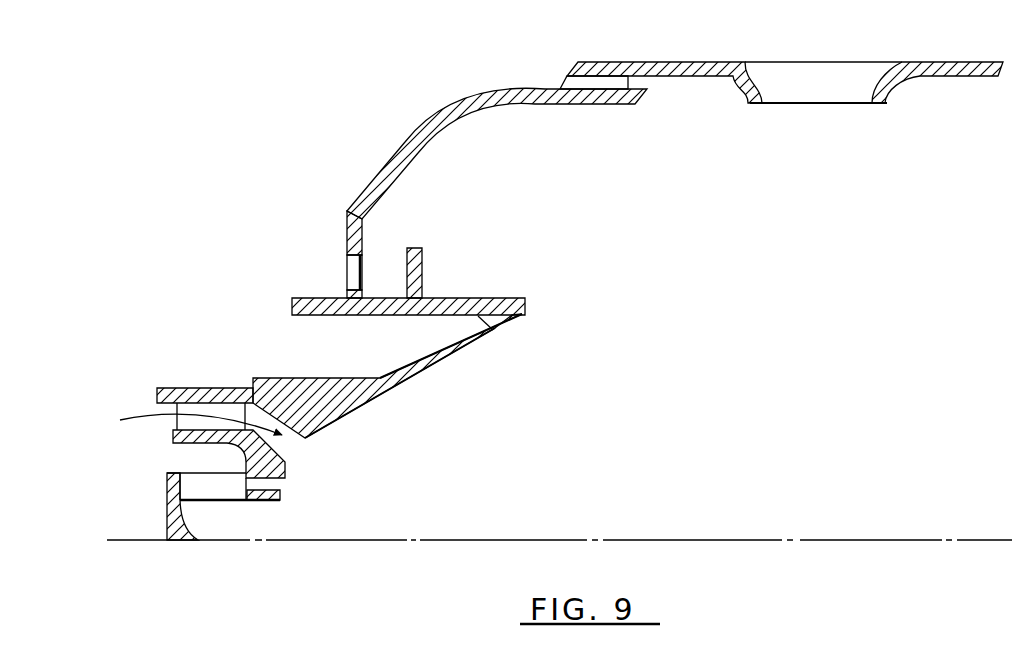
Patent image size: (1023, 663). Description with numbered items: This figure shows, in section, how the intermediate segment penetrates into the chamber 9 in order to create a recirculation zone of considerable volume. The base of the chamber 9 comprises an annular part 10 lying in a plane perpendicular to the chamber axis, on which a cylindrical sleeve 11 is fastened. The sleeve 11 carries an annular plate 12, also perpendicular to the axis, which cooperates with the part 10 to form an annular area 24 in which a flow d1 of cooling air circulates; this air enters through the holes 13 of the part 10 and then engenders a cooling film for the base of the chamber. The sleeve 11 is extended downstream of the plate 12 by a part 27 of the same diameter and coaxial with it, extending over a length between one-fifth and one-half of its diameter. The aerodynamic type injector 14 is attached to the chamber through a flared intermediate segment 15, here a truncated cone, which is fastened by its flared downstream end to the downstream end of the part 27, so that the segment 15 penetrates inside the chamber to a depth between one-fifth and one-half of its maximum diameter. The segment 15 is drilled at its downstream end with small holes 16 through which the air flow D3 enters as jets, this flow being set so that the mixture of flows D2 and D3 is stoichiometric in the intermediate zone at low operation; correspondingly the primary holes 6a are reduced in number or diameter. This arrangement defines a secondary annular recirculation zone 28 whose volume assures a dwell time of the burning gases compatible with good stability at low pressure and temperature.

The primary holes 6a is at (855, 103).
The chamber 9 is at (383, 148).
The annular part 10 is at (347, 226).
The holes 13 is at (347, 257).
The annular plate 12 is at (422, 253).
The cylindrical sleeve 11 is at (292, 308).
The part 27 is at (465, 305).
The annular area 24 is at (392, 248).
The secondary annular recirculation zone 28 is at (485, 206).
The cooling air flow d1 is at (386, 262).
The air flow through holes D3 is at (477, 316).
The air flow D2 is at (227, 492).
The holes 16 is at (495, 348).
The intermediate segment 15 is at (402, 398).
The aerodynamic type injector 14 is at (168, 520).